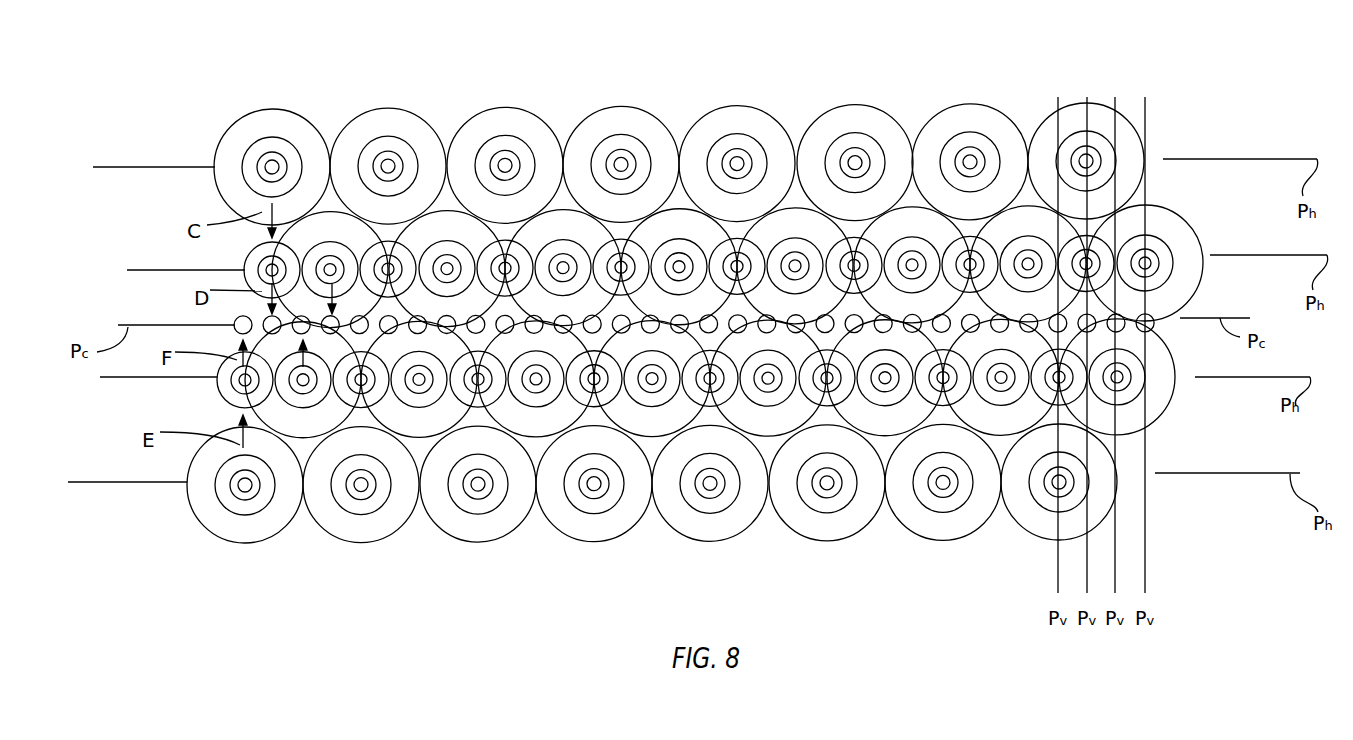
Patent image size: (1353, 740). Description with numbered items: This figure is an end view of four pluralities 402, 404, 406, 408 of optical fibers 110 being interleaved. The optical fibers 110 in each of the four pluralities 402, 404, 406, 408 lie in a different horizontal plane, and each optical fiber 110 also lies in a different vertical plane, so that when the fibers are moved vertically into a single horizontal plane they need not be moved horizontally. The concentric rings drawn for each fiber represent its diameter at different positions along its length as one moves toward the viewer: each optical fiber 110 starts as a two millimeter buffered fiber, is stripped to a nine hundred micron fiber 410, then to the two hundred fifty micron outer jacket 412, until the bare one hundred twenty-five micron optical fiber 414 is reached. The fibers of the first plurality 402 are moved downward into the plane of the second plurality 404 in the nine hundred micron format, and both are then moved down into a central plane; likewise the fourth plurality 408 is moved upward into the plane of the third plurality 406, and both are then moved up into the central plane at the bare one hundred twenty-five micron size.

The optical fibers 110 is at (392, 108).
The first plurality of optical fibers 402 is at (197, 129).
The second plurality of optical fibers 404 is at (1199, 211).
The third plurality of optical fibers 406 is at (1170, 396).
The fourth plurality of optical fibers 408 is at (187, 500).
The 900 micron fibers 410 is at (986, 135).
The 250 micron outer jacket 412 is at (960, 156).
The bare 125 micron optical fiber 414 is at (860, 157).